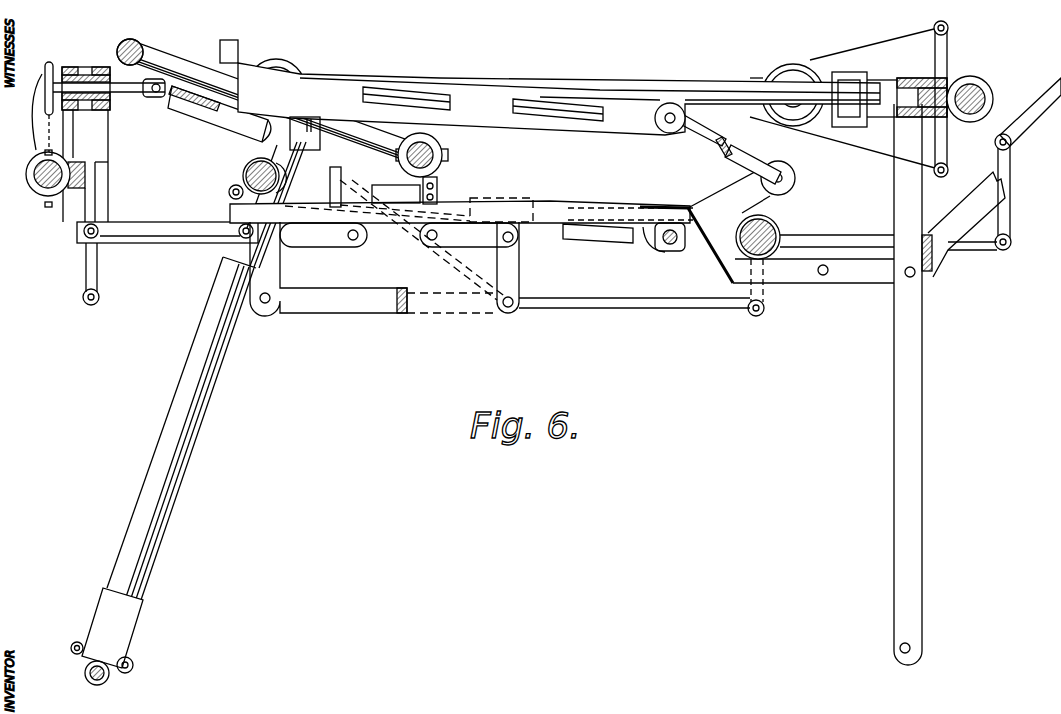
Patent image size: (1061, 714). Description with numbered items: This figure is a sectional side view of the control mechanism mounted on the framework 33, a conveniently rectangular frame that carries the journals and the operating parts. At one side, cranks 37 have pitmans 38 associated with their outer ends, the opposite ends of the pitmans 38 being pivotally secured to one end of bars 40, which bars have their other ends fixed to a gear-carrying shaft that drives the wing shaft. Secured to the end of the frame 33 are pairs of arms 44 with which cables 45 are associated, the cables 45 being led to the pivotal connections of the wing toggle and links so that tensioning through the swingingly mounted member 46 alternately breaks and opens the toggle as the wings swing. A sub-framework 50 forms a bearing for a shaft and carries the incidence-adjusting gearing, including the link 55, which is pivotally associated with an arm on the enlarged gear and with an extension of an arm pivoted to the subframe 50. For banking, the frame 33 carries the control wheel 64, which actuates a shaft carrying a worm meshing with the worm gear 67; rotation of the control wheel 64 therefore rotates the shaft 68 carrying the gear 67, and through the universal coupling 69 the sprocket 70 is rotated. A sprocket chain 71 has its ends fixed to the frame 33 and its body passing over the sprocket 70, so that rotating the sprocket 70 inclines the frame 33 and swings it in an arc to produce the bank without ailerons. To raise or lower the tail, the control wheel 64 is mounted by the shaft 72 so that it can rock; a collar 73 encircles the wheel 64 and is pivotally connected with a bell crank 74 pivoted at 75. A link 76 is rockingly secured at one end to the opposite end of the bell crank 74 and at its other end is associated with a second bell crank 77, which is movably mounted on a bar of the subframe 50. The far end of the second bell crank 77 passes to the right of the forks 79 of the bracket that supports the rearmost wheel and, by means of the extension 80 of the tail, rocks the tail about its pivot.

The framework 33 is at (978, 90).
The cranks 37 is at (770, 200).
The pitmans 38 is at (712, 142).
The bars 40 is at (612, 100).
The arms 44 is at (948, 38).
The cables 45 is at (908, 38).
The member 46 is at (795, 70).
The sub-framework 50 is at (940, 254).
The link 55 is at (337, 310).
The control wheel 64 is at (140, 44).
The worm gear 67 is at (256, 162).
The shaft 68 is at (216, 128).
The universal coupling 69 is at (160, 100).
The sprocket 70 is at (53, 64).
The sprocket chain 71 is at (44, 122).
The shaft 72 is at (284, 92).
The collar 73 is at (442, 146).
The bell crank 74 is at (470, 244).
The pivot 75 is at (519, 240).
The link 76 is at (566, 306).
The second bell crank 77 is at (824, 240).
The forks 79 is at (918, 326).
The extension 80 is at (1045, 112).